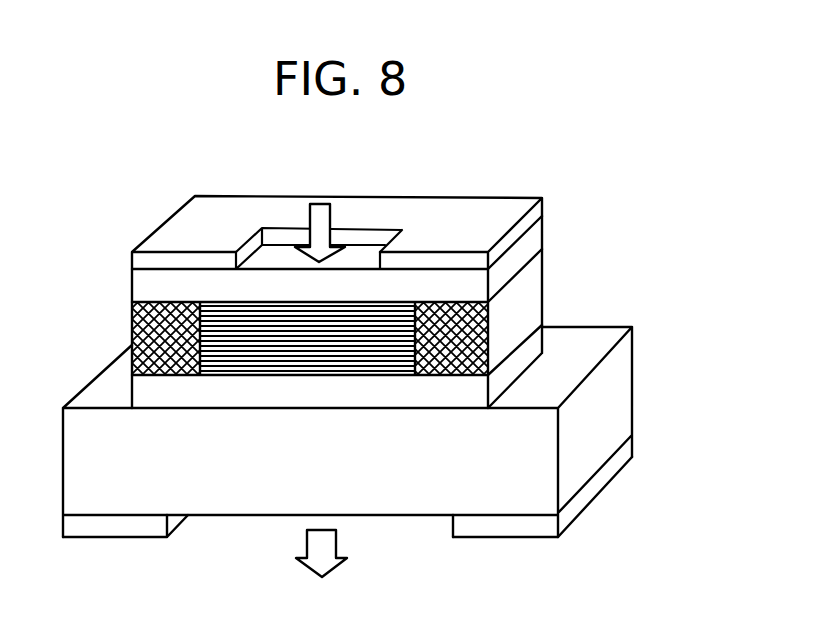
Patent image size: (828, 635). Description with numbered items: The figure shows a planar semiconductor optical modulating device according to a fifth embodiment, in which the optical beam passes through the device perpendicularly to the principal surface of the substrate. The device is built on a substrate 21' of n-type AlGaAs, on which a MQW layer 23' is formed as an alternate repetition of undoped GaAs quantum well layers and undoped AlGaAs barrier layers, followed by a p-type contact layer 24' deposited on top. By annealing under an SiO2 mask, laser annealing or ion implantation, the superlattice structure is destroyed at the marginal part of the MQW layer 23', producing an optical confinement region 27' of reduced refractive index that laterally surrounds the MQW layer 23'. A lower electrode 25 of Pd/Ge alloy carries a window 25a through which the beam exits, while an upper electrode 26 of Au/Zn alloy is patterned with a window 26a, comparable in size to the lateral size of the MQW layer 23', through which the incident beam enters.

The substrate 21' is at (385, 432).
The MQW layer 23' is at (380, 317).
The contact layer 24' is at (380, 249).
The electrode 25 is at (545, 528).
The window 25a is at (430, 525).
The electrode 26 is at (543, 208).
The window 26a is at (368, 250).
The optical confinement region 27' is at (380, 312).